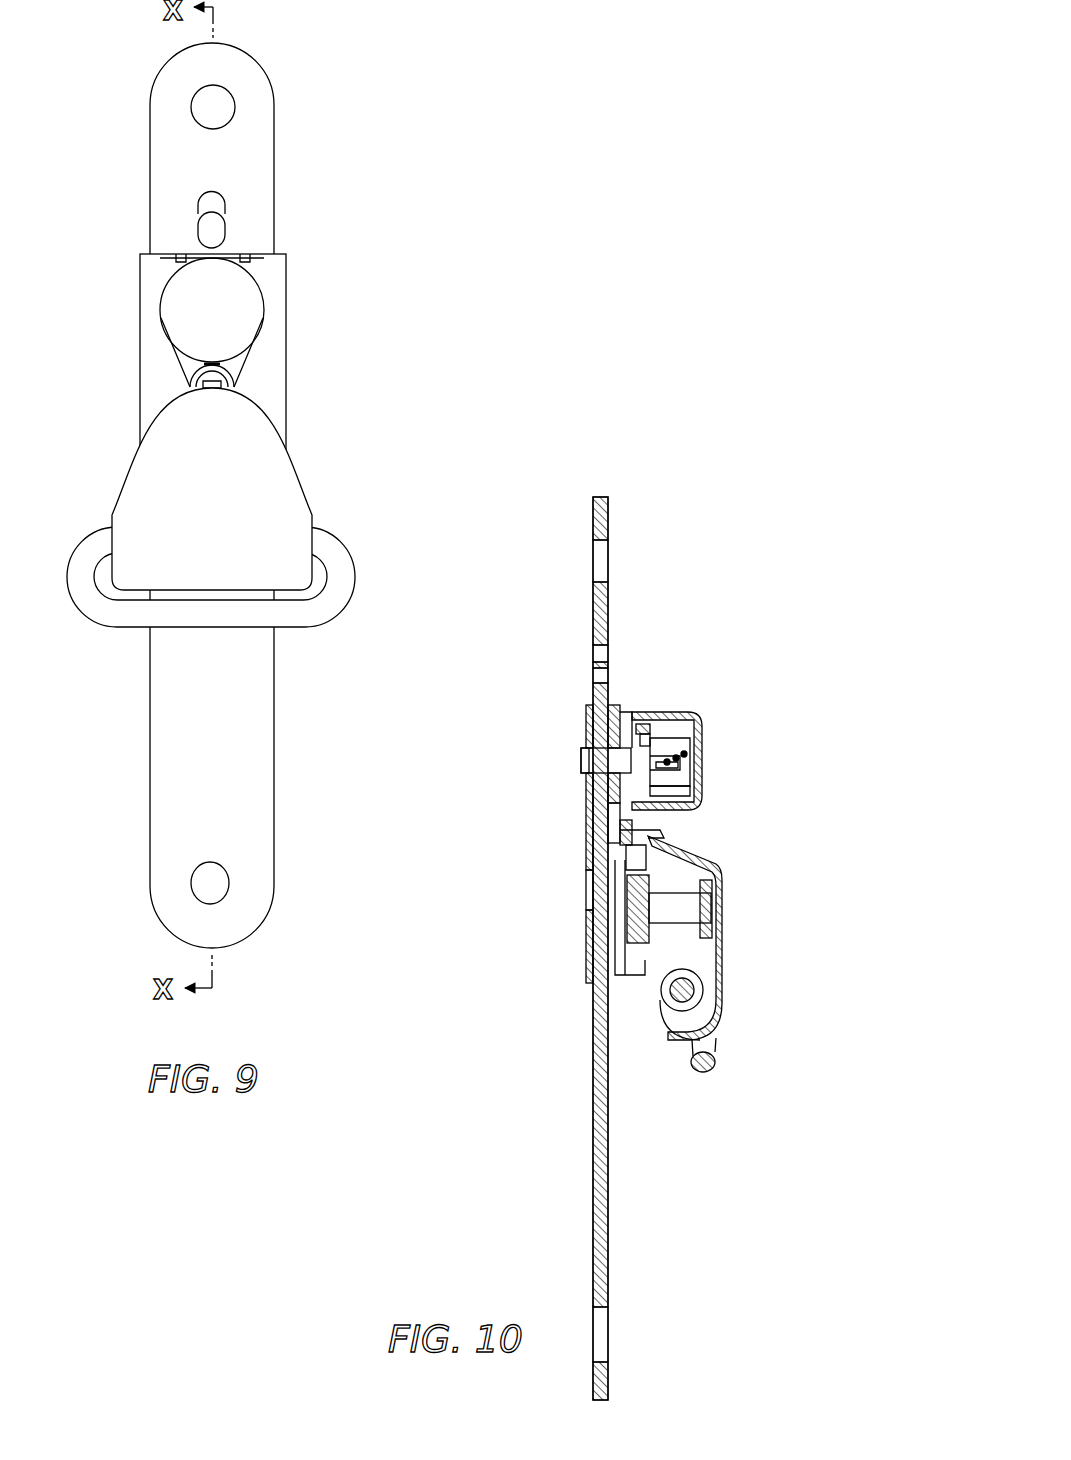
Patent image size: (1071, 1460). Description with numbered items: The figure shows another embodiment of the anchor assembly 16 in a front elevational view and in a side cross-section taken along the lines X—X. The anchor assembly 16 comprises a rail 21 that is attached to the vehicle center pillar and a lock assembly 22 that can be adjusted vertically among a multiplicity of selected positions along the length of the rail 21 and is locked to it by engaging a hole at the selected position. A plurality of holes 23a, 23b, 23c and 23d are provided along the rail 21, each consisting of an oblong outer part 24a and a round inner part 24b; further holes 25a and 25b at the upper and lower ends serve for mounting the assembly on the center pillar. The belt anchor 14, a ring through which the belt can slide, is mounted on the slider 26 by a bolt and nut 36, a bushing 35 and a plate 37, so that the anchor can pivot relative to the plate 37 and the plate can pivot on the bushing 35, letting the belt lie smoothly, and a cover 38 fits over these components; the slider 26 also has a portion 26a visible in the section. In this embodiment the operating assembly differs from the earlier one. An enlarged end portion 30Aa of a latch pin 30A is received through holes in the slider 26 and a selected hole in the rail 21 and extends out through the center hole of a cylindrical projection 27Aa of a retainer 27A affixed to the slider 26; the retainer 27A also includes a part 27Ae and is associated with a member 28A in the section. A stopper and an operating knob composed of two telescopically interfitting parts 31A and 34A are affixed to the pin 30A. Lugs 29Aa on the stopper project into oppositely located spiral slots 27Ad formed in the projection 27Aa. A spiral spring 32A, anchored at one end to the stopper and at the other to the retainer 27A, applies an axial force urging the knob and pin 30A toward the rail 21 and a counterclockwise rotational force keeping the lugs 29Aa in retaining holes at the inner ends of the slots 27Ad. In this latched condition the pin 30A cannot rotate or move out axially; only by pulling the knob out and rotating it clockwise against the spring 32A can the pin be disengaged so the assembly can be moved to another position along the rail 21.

In FIG. 9, the belt anchor 14 is at (100, 612).
In FIG. 10, the belt anchor 14 is at (712, 1068).
In FIG. 9, the anchor assembly 16 is at (134, 400).
In FIG. 10, the anchor assembly 16 is at (810, 866).
In FIG. 9, the rail 21 is at (160, 797).
In FIG. 10, the rail 21 is at (593, 1202).
In FIG. 9, the lock assembly 22 is at (133, 293).
In FIG. 10, the lock assembly 22 is at (745, 731).
In FIG. 9, the hole 23a is at (327, 224).
In FIG. 10, the hole 23a is at (703, 617).
In FIG. 10, the hole 23b is at (587, 720).
In FIG. 10, the hole 23c is at (588, 840).
In FIG. 10, the hole 23d is at (590, 905).
In FIG. 9, the oblong outer part 24a is at (222, 206).
In FIG. 10, the oblong outer part 24a is at (600, 655).
In FIG. 9, the round inner part 24b is at (222, 236).
In FIG. 10, the round inner part 24b is at (600, 680).
In FIG. 9, the hole 25a is at (228, 108).
In FIG. 10, the hole 25a is at (605, 560).
In FIG. 9, the hole 25b is at (228, 883).
In FIG. 10, the hole 25b is at (605, 1325).
In FIG. 9, the slider 26 is at (272, 302).
In FIG. 10, the slider 26 is at (606, 860).
In FIG. 10, the plate portion 26a is at (608, 782).
In FIG. 9, the retainer 27A is at (242, 360).
In FIG. 10, the retainer 27A is at (660, 834).
In FIG. 10, the cylindrical projection 27Aa is at (682, 730).
In FIG. 10, the spiral slots 27Ad is at (700, 772).
In FIG. 10, the guide member portion 27Ae is at (700, 792).
In FIG. 9, the stopper 28A is at (233, 380).
In FIG. 10, the stopper 28A is at (668, 870).
In FIG. 10, the lugs 29Aa is at (644, 724).
In FIG. 10, the latch pin 30A is at (540, 743).
In FIG. 10, the enlarged end portion 30Aa is at (581, 752).
In FIG. 10, the operating knob part 31A is at (612, 706).
In FIG. 10, the spiral spring 32A is at (700, 752).
In FIG. 9, the operating knob part 34A is at (183, 313).
In FIG. 10, the operating knob part 34A is at (700, 737).
In FIG. 10, the bushing 35 is at (643, 960).
In FIG. 10, the bolt and nut 36 is at (700, 910).
In FIG. 10, the plate 37 is at (703, 1003).
In FIG. 9, the cover 38 is at (140, 495).
In FIG. 10, the cover 38 is at (722, 985).